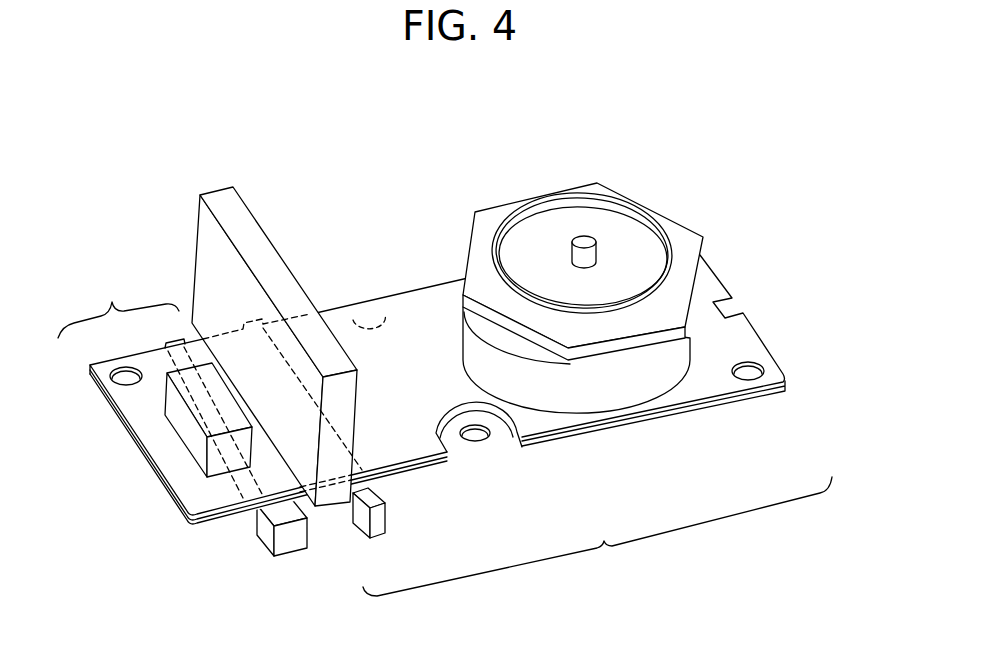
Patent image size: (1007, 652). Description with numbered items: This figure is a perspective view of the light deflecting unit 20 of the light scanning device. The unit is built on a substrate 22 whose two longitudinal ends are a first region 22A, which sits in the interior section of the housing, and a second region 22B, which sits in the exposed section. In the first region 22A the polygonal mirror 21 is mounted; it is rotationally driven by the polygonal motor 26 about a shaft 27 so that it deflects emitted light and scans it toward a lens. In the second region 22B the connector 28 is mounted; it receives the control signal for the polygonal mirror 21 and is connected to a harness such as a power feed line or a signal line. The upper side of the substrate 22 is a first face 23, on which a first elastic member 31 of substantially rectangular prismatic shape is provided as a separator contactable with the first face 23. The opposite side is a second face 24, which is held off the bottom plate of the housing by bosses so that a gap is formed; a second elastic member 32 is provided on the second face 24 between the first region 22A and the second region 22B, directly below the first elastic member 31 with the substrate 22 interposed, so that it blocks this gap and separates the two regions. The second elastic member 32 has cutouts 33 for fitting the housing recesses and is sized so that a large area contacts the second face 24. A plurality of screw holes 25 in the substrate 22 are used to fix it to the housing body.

The light deflecting unit 20 is at (631, 252).
The polygonal mirror 21 is at (685, 240).
The substrate 22 is at (449, 381).
The first region 22A is at (597, 536).
The second region 22B is at (118, 303).
The first face 23 is at (421, 305).
The second face 24 is at (356, 316).
The screw holes 25 is at (125, 386).
The polygonal motor 26 is at (673, 357).
The shaft 27 is at (585, 238).
The connector 28 is at (190, 432).
The first elastic member 31 is at (274, 352).
The second elastic member 32 is at (275, 527).
The cutouts 33 is at (322, 516).